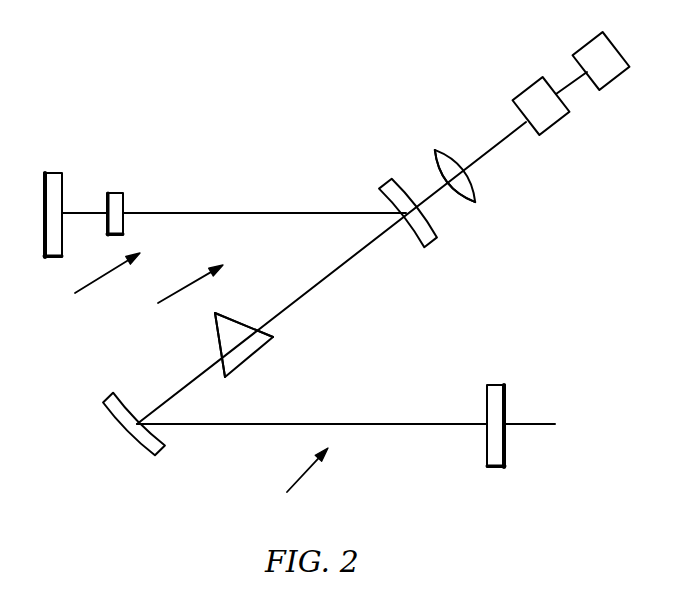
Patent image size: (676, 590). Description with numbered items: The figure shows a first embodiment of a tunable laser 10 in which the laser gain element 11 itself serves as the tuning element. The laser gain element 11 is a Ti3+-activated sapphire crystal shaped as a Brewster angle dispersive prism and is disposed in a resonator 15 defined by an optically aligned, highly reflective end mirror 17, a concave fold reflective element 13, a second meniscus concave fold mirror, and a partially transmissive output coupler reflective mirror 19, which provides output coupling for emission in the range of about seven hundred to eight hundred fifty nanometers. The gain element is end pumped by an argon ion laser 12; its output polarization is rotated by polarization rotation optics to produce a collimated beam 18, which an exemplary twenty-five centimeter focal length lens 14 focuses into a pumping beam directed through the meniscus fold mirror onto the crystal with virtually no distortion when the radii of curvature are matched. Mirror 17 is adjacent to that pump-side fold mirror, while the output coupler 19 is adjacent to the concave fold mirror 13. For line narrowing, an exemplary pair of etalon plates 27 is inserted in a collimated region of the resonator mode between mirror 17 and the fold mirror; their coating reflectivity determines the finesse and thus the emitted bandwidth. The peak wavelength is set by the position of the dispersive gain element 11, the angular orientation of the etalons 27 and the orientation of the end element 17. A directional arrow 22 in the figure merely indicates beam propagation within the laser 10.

The tunable laser 10 is at (295, 483).
The laser gain element 11 is at (250, 358).
The argon ion laser 12 is at (588, 50).
The concave fold reflective element 13 is at (118, 397).
The lens 14 is at (445, 150).
The resonator 15 is at (176, 292).
The end reflective element 17 is at (62, 178).
The collimated beam 18 is at (483, 152).
The output coupler reflective mirror 19 is at (505, 395).
The beam direction arrow 22 is at (91, 285).
The etalon plates 27 is at (123, 200).